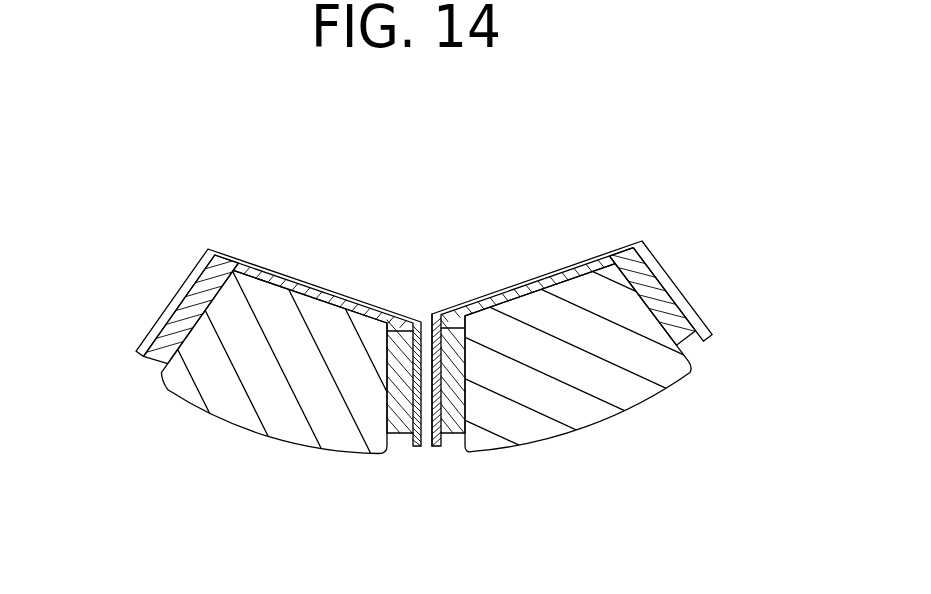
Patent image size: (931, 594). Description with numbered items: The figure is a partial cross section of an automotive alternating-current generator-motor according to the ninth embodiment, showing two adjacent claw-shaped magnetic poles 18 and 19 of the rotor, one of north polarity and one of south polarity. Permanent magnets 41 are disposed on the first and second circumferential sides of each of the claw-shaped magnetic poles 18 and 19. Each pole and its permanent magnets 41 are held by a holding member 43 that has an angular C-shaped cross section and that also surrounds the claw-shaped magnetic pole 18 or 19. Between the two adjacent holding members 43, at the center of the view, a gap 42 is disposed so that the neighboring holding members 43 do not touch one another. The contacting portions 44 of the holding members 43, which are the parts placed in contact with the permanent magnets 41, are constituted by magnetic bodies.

The claw-shaped magnetic pole 18 is at (572, 410).
The claw-shaped magnetic pole 19 is at (275, 412).
The permanent magnet 41 is at (223, 262).
The gap 42 is at (441, 290).
The holding member 43 is at (297, 268).
The contacting portion 44 is at (171, 301).